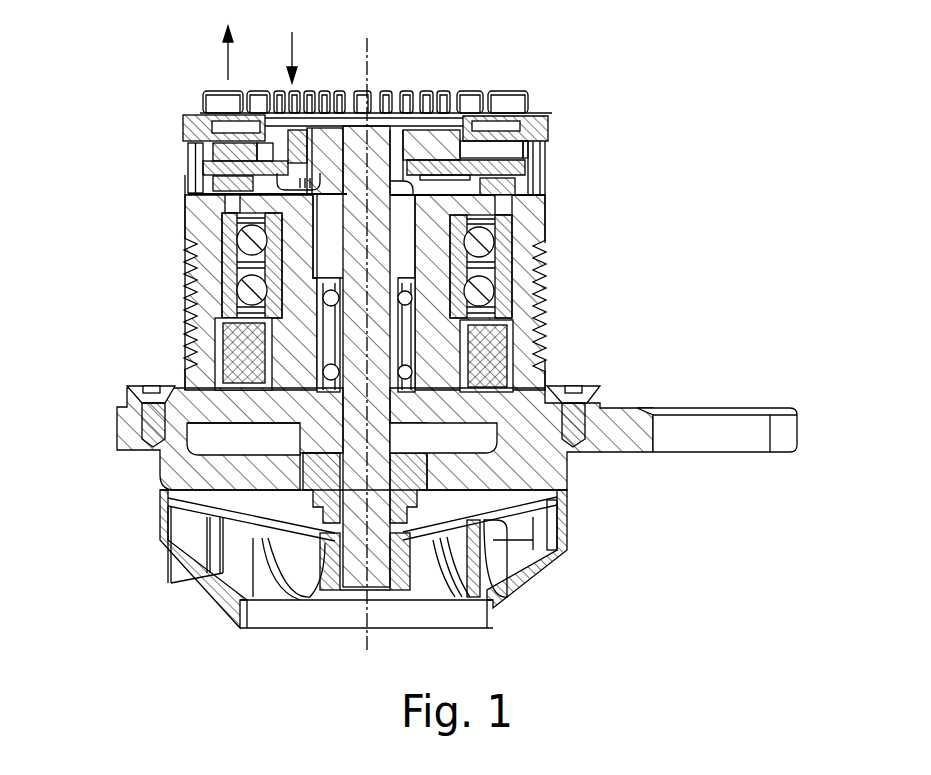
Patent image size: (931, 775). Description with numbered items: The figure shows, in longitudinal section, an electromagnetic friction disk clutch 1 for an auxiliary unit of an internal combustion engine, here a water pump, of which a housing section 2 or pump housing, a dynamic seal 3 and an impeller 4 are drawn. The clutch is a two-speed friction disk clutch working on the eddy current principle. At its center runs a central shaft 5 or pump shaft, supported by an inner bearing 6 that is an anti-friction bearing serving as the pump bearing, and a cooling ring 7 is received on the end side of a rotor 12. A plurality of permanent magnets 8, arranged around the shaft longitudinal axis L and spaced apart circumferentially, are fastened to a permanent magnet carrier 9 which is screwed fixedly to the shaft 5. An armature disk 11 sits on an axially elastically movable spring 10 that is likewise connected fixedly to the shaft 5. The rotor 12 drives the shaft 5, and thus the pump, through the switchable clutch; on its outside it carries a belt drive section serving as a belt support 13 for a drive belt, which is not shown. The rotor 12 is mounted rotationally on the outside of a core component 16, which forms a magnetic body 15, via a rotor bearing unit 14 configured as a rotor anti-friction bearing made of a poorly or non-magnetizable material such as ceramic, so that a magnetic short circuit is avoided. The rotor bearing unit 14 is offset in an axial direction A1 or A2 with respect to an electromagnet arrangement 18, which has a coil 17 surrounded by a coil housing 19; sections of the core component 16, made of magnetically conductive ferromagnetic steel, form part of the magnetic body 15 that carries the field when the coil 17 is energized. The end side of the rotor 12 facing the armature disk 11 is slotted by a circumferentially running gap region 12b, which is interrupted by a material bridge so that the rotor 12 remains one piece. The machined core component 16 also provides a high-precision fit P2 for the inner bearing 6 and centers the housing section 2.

The electromagnetic friction disk clutch 1 is at (614, 163).
The housing section 2 is at (641, 409).
The dynamic seal 3 is at (432, 512).
The impeller 4 is at (184, 592).
The central shaft 5 is at (385, 130).
The inner bearing 6 is at (312, 322).
The cooling ring 7 is at (510, 80).
The permanent magnets 8 is at (488, 152).
The permanent magnet carrier 9 is at (230, 158).
The spring 10 is at (212, 173).
The armature disk 11 is at (518, 185).
The rotor 12 is at (543, 234).
The gap region 12b is at (503, 212).
The belt support 13 is at (550, 297).
The rotor bearing unit 14 is at (220, 277).
The magnetic body 15 is at (294, 380).
The core component 16 is at (403, 327).
The coil 17 is at (220, 361).
The electromagnet arrangement 18 is at (550, 322).
The coil housing 19 is at (222, 333).
The shaft longitudinal axis L is at (371, 67).
The axial direction A1 is at (294, 50).
The axial direction A2 is at (226, 57).
The high-precision fit P2 is at (512, 370).